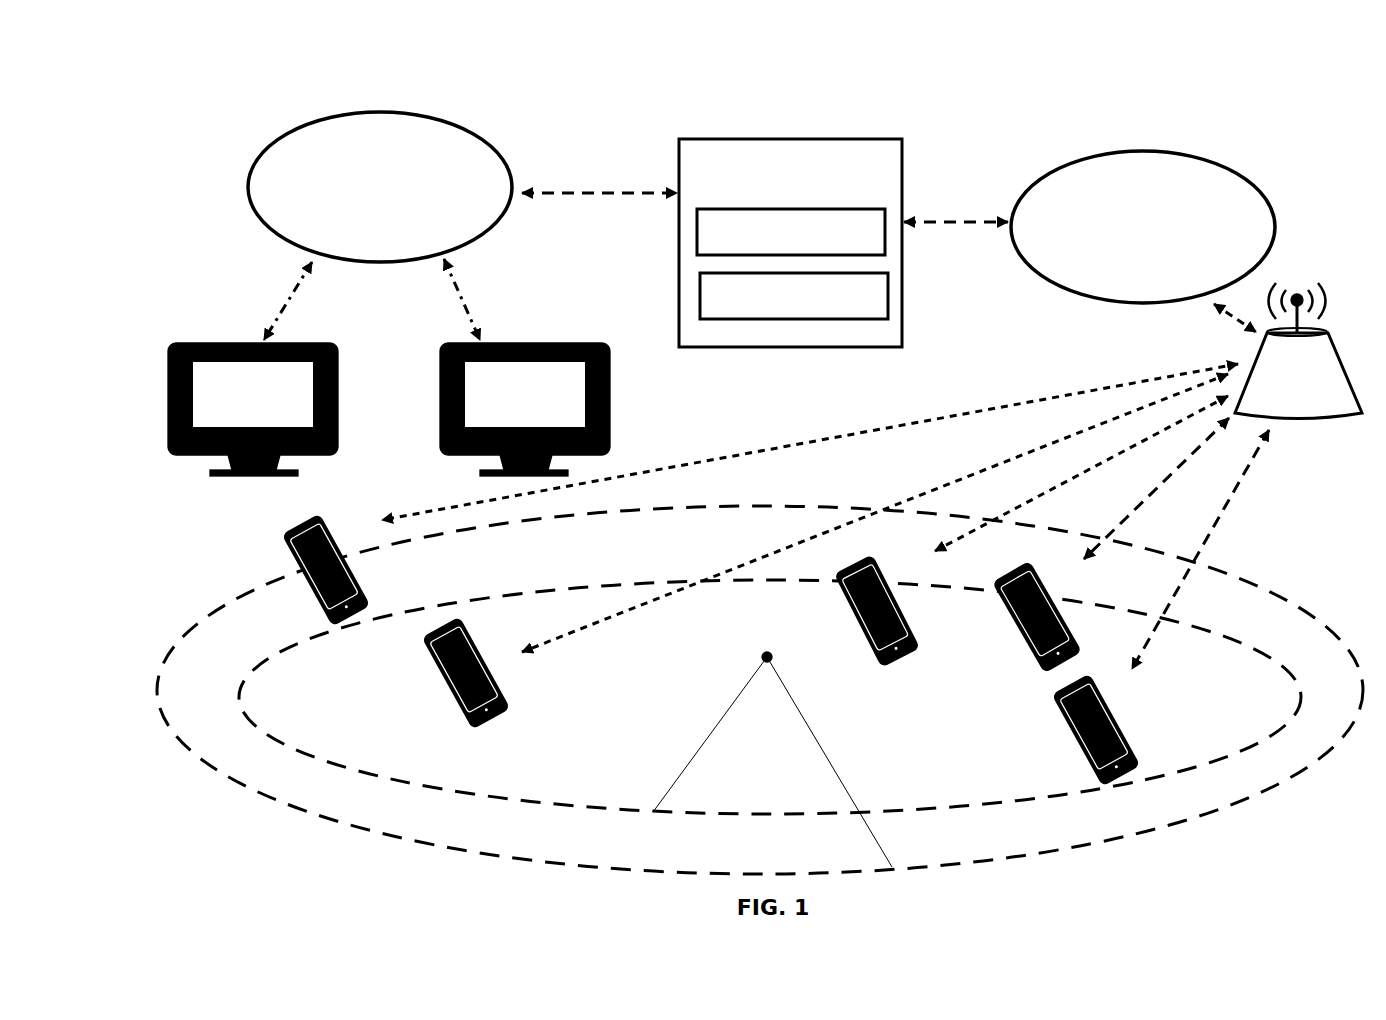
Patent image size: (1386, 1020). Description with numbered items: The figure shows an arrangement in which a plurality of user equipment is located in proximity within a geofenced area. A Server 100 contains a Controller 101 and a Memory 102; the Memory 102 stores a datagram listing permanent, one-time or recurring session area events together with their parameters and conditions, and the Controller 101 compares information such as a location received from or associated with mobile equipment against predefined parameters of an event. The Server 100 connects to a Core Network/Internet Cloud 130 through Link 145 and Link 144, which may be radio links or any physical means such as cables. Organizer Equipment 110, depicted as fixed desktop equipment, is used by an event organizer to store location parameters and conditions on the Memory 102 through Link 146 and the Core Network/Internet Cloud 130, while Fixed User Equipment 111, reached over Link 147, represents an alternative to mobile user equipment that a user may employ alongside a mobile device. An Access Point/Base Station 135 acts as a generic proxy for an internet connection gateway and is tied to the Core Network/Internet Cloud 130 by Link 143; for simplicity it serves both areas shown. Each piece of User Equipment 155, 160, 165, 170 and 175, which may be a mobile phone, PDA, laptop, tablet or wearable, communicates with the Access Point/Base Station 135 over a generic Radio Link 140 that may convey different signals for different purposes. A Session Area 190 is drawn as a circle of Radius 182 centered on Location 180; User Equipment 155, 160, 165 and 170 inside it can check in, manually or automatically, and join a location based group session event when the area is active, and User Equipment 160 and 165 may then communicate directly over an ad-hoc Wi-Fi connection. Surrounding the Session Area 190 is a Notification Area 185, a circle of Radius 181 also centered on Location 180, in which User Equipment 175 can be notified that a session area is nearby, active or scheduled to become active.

The server 100 is at (791, 139).
The controller 101 is at (697, 226).
The memory 102 is at (700, 302).
The organizer equipment 110 is at (458, 455).
The fixed user equipment 111 is at (249, 477).
The core network/Internet cloud 130 is at (280, 137).
The access point/base station 135 is at (1298, 351).
The radio link 140 is at (900, 495).
The link 143 is at (1235, 325).
The link 144 is at (940, 222).
The link 145 is at (601, 190).
The link 146 is at (452, 272).
The link 147 is at (305, 272).
The user equipment 155 is at (480, 726).
The user equipment 160 is at (890, 667).
The user equipment 165 is at (1003, 677).
The user equipment 170 is at (1152, 735).
The user equipment 175 is at (380, 597).
The location 180 is at (763, 657).
The radius 181 is at (880, 850).
The radius 182 is at (700, 736).
The notification area 185 is at (1030, 824).
The session area 190 is at (892, 786).